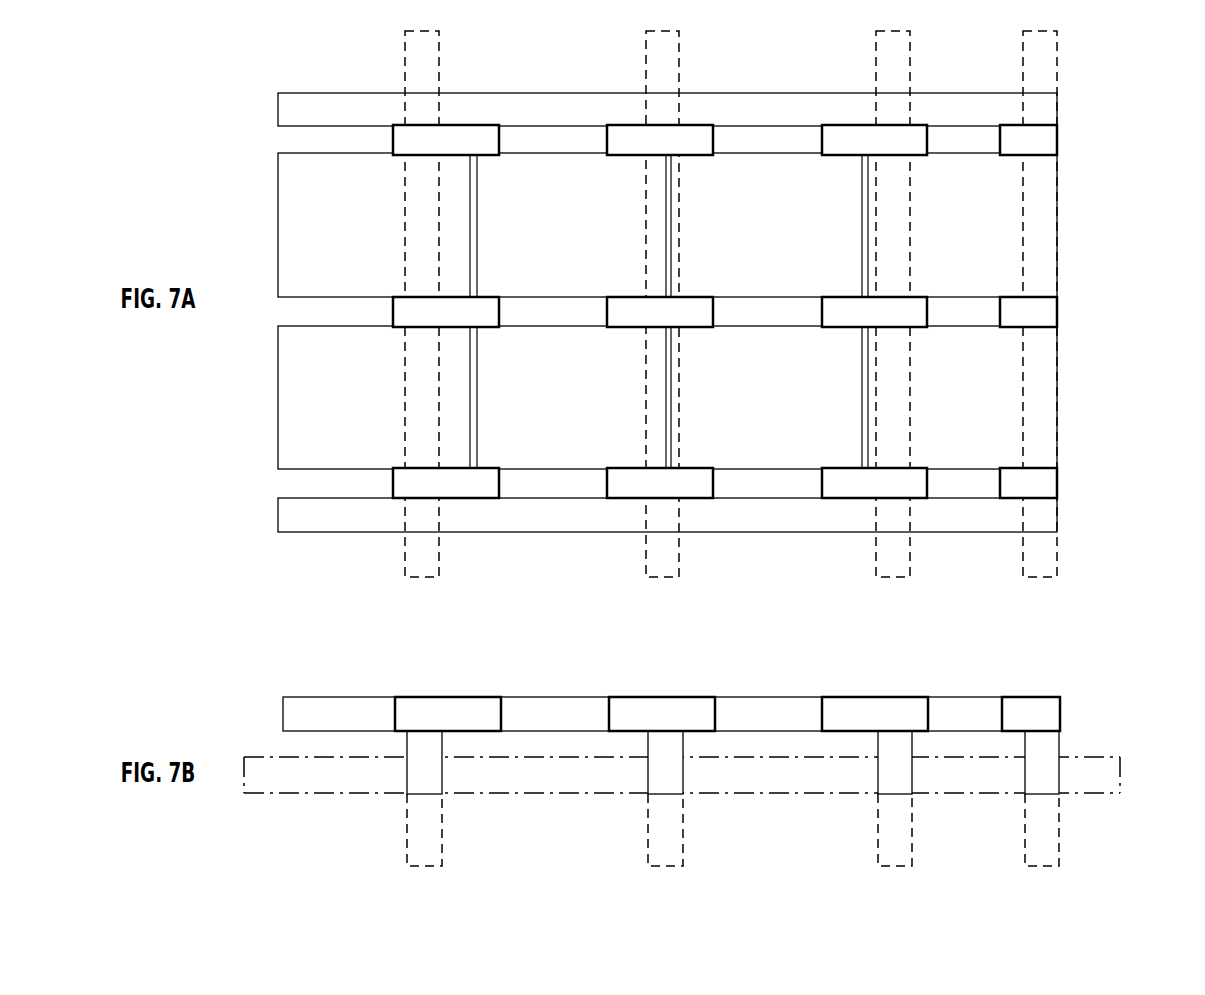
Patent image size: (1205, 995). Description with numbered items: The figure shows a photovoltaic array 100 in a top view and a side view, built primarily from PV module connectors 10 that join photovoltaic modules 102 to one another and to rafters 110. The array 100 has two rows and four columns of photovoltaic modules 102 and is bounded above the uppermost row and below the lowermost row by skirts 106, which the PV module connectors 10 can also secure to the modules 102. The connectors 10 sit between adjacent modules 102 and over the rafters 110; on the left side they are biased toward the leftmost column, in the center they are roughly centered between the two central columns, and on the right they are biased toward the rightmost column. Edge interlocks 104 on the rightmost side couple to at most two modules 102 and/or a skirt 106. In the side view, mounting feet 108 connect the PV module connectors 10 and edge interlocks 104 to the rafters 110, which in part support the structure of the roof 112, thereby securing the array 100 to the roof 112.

In FIG. 7A, the PV module connector 10 is at (660, 311).
In FIG. 7B, the PV module connector 10 is at (661, 714).
In FIG. 7A, the photovoltaic array 100 is at (1154, 151).
In FIG. 7B, the photovoltaic array 100 is at (1120, 665).
In FIG. 7A, the photovoltaic module 102 is at (667, 311).
In FIG. 7B, the photovoltaic module 102 is at (671, 687).
In FIG. 7A, the edge interlock 104 is at (939, 311).
In FIG. 7B, the edge interlock 104 is at (1031, 714).
In FIG. 7A, the skirt 106 is at (667, 312).
In FIG. 7B, the mounting foot 108 is at (733, 762).
In FIG. 7A, the rafter 110 is at (731, 304).
In FIG. 7B, the rafter 110 is at (733, 830).
In FIG. 7B, the roof 112 is at (682, 775).